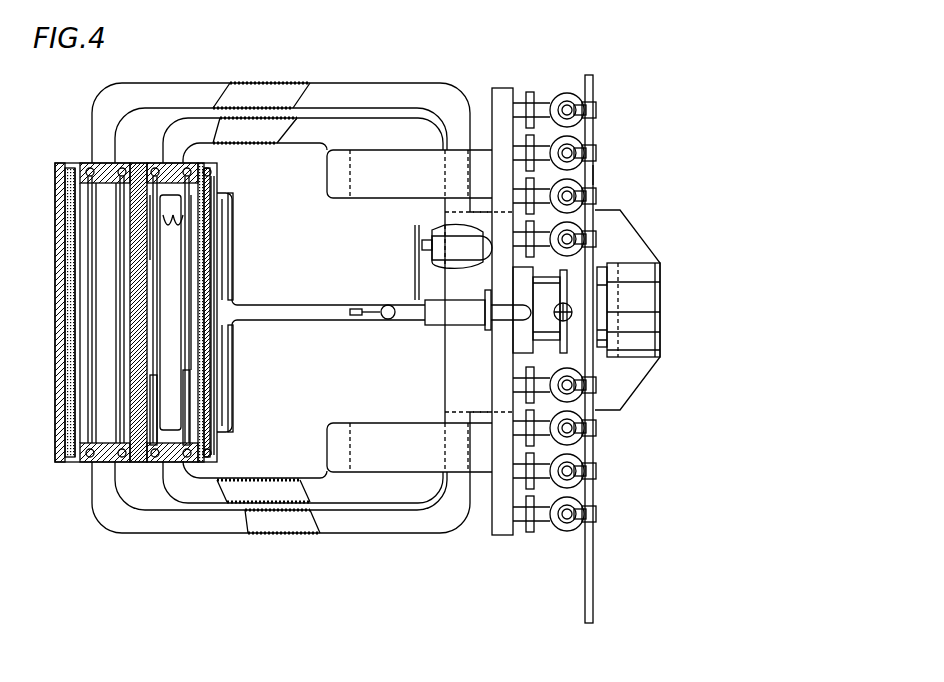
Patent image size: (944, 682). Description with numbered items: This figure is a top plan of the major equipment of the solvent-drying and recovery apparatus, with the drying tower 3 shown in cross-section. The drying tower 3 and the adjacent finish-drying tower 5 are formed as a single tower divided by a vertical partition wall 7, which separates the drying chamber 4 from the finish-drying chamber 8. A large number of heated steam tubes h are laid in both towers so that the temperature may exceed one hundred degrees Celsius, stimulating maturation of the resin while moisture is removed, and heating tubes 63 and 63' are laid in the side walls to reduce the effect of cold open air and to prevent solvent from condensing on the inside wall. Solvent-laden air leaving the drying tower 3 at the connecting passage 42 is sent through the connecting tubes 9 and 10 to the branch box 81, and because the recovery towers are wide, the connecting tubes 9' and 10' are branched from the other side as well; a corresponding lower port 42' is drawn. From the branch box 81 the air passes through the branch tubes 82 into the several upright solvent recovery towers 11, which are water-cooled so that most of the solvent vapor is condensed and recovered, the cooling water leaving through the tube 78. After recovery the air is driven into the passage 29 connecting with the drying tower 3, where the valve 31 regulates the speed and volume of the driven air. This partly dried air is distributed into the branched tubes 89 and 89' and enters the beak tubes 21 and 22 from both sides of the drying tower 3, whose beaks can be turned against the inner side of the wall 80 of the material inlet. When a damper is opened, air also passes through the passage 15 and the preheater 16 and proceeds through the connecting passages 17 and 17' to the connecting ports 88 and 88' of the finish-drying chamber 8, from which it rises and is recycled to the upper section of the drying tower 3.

The drying tower 3 is at (216, 205).
The drying chamber 4 is at (172, 395).
The finish-drying tower 5 is at (56, 200).
The vertical partition wall 7 is at (135, 425).
The finish-drying chamber 8 is at (110, 376).
The connecting tube 9 is at (293, 139).
The connecting tube 9' is at (303, 482).
The connecting tube 10 is at (391, 234).
The connecting tube 10' is at (392, 449).
The solvent recovery tower 11 is at (560, 95).
The passage 15 is at (640, 285).
The preheater 16 is at (445, 351).
The connecting passage 17 is at (281, 124).
The connecting passage 17' is at (281, 486).
The beak tube 21 is at (153, 285).
The beak tube 22 is at (173, 325).
The passage 29 is at (303, 305).
The valve 31 is at (365, 308).
The connecting passage 42 is at (154, 292).
The bolt 42' is at (154, 475).
The heating tube 63 is at (245, 312).
The heating tube 63' is at (48, 312).
The tube 78 is at (587, 92).
The wall 80 is at (596, 174).
The branch box 81 is at (499, 88).
The branch tube 82 is at (528, 92).
The connecting port 88 is at (73, 280).
The connecting port 88' is at (78, 480).
The branched tube 89 is at (254, 246).
The branched tube 89' is at (255, 378).
The heated steam tube h is at (134, 282).